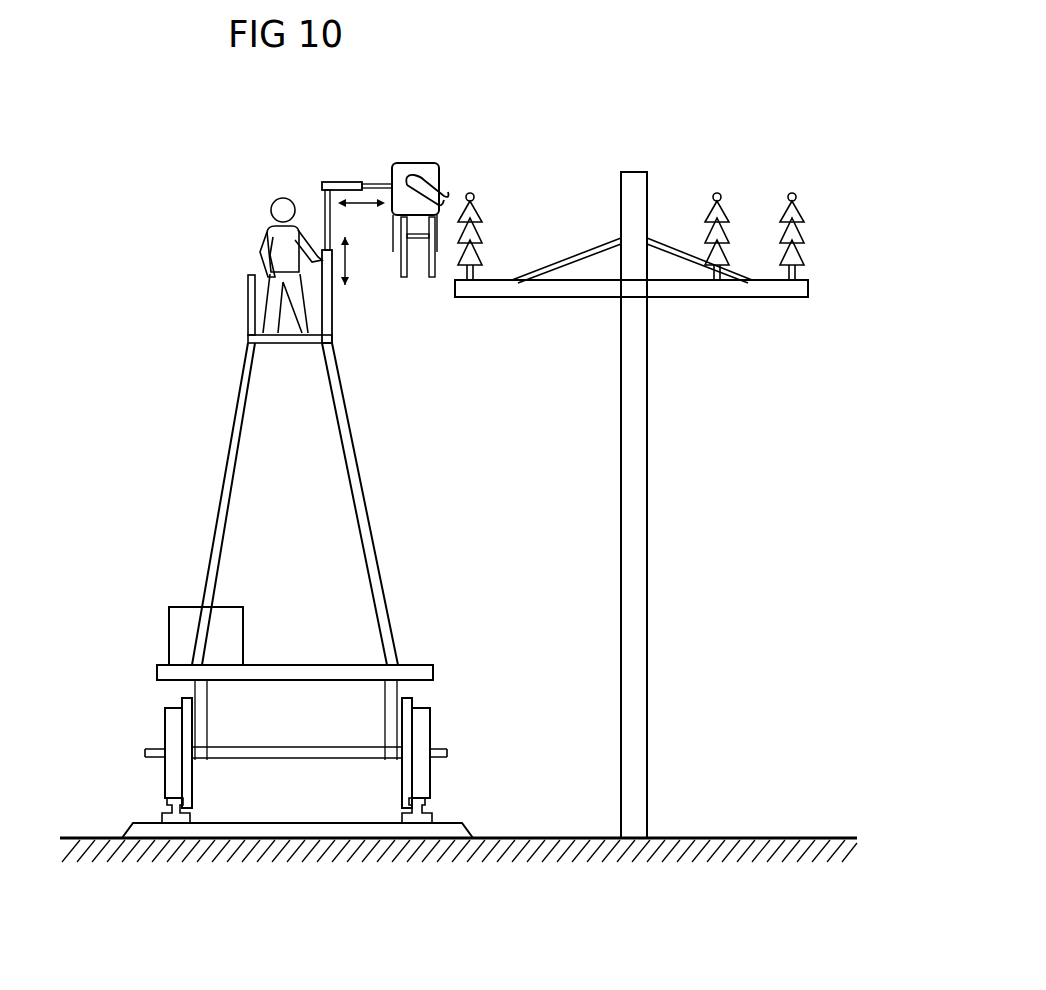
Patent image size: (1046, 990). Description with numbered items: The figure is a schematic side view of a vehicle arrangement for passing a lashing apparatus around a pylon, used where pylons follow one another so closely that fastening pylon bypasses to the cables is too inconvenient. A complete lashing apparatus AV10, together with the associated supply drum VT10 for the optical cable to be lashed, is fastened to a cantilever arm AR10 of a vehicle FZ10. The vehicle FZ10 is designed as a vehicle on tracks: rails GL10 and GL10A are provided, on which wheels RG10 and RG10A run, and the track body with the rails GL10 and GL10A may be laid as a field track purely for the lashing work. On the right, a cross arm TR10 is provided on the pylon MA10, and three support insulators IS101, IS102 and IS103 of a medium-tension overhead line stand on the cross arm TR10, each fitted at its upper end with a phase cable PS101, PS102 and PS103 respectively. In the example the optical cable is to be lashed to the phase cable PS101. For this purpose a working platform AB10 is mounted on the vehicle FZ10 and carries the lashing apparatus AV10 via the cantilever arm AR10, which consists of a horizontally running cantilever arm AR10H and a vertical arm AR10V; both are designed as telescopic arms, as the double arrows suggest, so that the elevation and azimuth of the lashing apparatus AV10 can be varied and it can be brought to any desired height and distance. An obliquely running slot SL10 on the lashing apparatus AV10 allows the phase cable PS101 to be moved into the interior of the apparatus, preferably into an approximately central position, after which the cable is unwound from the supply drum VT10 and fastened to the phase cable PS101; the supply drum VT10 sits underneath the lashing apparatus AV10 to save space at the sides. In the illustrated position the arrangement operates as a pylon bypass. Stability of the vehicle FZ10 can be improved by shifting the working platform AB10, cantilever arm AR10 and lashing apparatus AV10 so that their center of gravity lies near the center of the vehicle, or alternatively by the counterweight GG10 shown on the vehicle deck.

The lashing apparatus AV10 is at (424, 197).
The cantilever arm AR10 is at (336, 252).
The horizontally running cantilever arm AR10H is at (352, 182).
The vertical arm AR10V is at (335, 322).
The obliquely running slot SL10 is at (445, 200).
The supply drum VT10 is at (402, 266).
The working platform AB10 is at (250, 297).
The phase cable PS101 is at (474, 196).
The phase cable PS102 is at (713, 195).
The phase cable PS103 is at (795, 194).
The support insulator IS101 is at (485, 238).
The support insulator IS102 is at (722, 215).
The support insulator IS103 is at (803, 254).
The cross arm TR10 is at (557, 297).
The pylon MA10 is at (635, 535).
The counterweight GG10 is at (188, 616).
The vehicle FZ10 is at (424, 642).
The wheel RG10 is at (170, 732).
The wheel RG10A is at (420, 725).
The rail GL10 is at (165, 814).
The rail GL10A is at (425, 815).